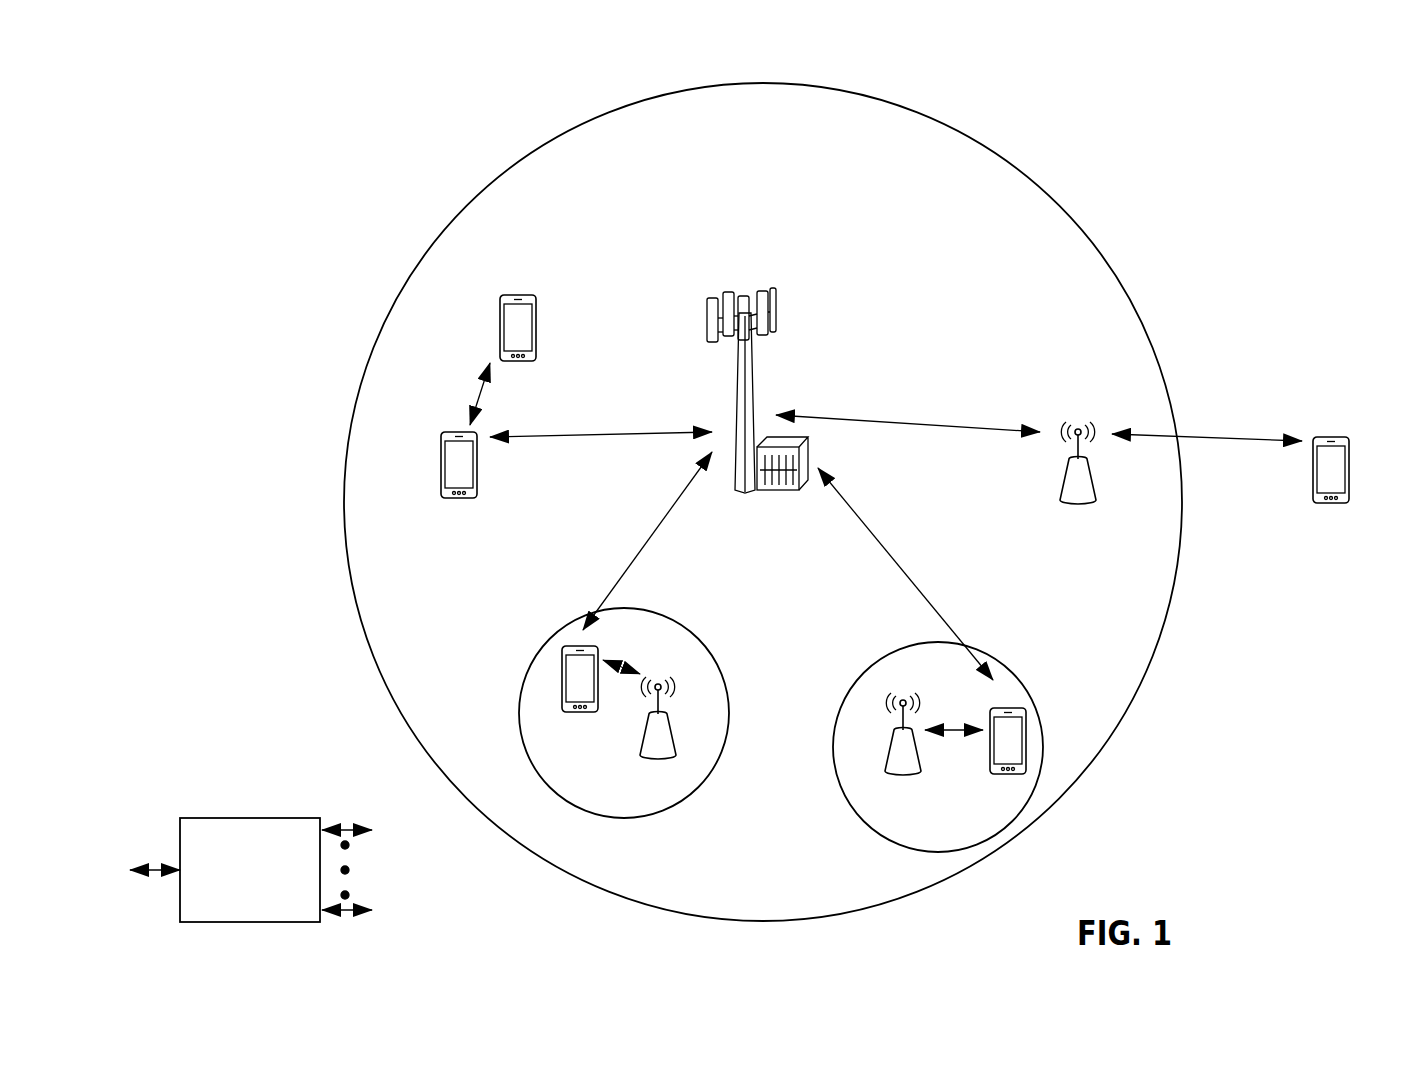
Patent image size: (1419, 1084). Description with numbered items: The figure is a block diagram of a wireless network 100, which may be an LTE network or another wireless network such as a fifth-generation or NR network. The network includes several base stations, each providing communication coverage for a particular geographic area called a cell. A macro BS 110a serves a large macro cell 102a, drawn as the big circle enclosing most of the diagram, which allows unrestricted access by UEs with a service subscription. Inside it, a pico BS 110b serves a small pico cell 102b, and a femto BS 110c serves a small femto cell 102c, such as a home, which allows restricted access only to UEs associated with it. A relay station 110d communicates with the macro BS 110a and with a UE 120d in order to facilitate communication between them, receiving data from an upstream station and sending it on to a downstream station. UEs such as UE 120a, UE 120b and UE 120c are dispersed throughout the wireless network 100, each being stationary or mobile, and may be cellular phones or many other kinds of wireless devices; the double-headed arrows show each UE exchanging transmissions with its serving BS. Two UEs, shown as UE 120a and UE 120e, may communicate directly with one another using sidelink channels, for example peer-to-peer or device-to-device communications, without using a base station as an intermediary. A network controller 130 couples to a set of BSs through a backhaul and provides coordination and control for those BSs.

The wireless network 100 is at (236, 78).
The macro cell 102a is at (1046, 190).
The pico cell 102b is at (716, 646).
The femto cell 102c is at (862, 660).
The macro BS 110a is at (752, 285).
The pico BS 110b is at (680, 740).
The femto BS 110c is at (883, 758).
The relay station 110d is at (1080, 422).
The UE 120a is at (440, 458).
The UE 120b is at (563, 715).
The UE 120c is at (992, 776).
The UE 120d is at (1342, 437).
The UE 120e is at (499, 313).
The network controller 130 is at (250, 818).